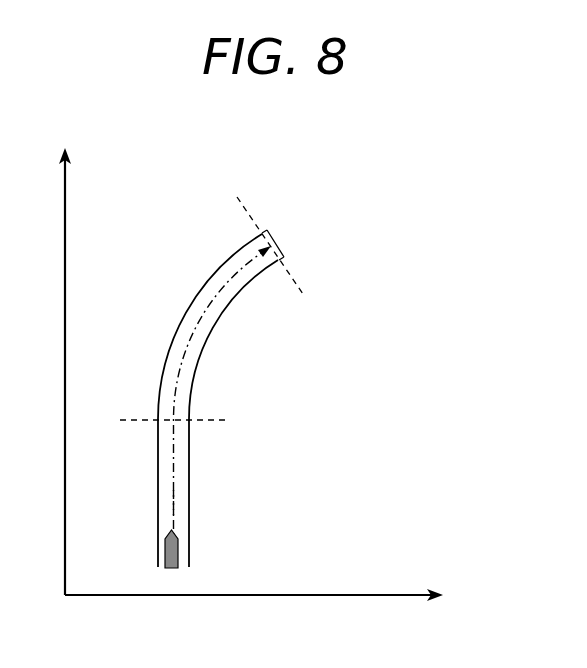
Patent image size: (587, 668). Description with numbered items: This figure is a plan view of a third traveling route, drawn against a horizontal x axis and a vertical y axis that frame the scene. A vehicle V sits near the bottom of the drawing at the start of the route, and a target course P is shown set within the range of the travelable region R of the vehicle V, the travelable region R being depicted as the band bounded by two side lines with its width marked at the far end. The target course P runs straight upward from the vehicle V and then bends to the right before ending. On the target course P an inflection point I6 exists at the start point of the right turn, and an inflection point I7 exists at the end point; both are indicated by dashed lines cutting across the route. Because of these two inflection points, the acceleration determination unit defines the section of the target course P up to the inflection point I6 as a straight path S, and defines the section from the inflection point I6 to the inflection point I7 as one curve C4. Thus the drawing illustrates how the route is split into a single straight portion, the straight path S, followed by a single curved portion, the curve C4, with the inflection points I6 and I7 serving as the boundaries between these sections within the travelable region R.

The target course P is at (197, 325).
The travelable region R is at (283, 241).
The curve C4 is at (232, 300).
The inflection point I7 is at (260, 235).
The inflection point I6 is at (189, 422).
The straight path S is at (176, 503).
The vehicle V is at (178, 547).
The x axis x is at (267, 597).
The y axis y is at (65, 358).